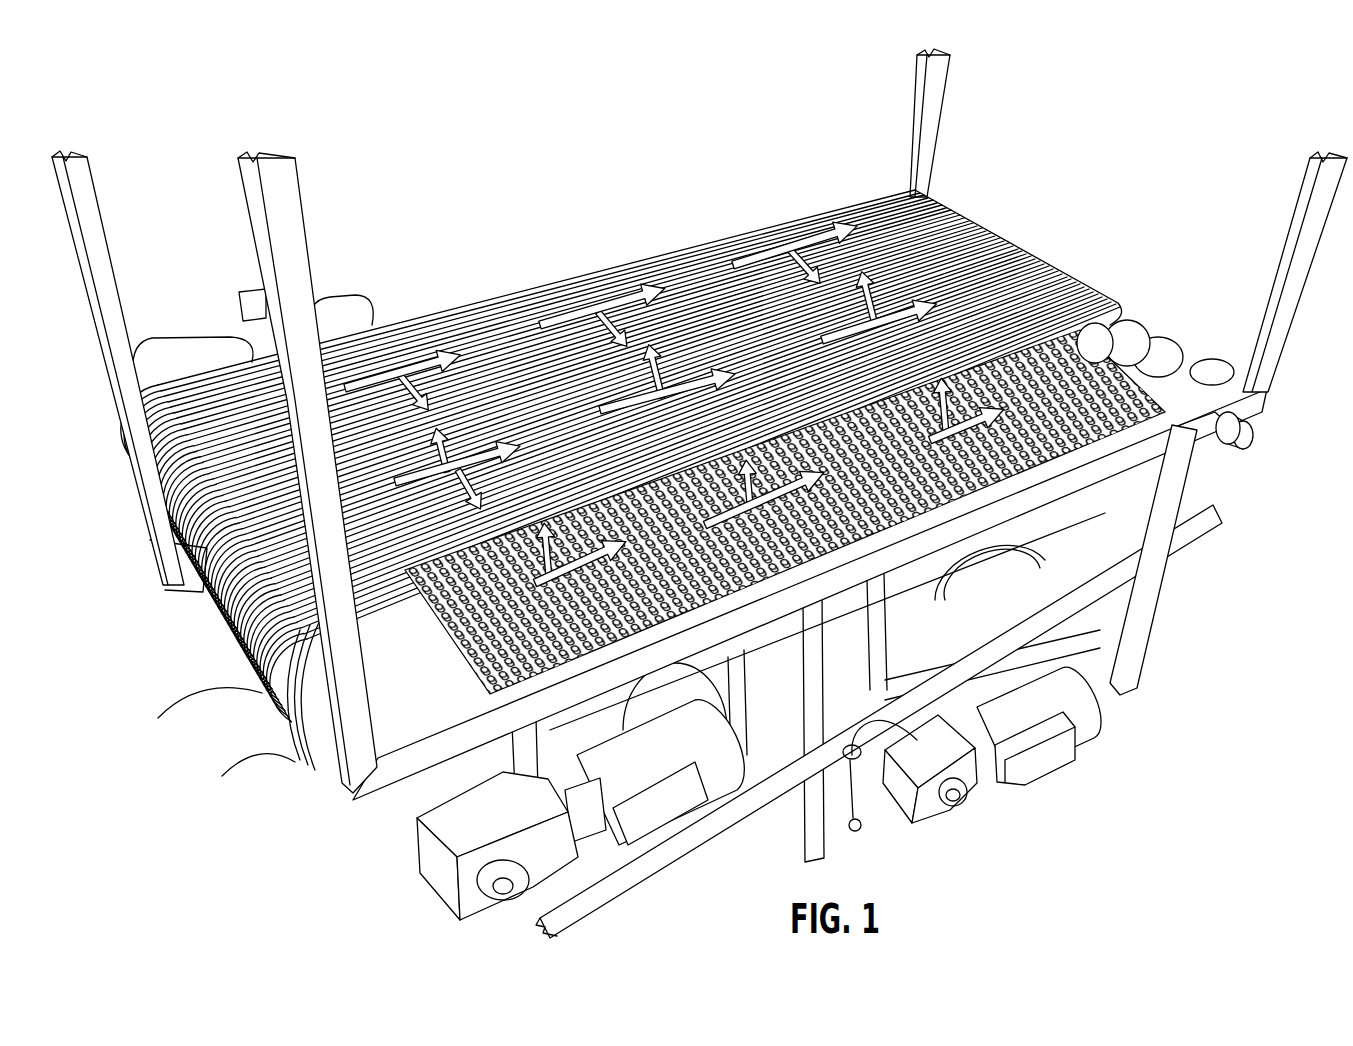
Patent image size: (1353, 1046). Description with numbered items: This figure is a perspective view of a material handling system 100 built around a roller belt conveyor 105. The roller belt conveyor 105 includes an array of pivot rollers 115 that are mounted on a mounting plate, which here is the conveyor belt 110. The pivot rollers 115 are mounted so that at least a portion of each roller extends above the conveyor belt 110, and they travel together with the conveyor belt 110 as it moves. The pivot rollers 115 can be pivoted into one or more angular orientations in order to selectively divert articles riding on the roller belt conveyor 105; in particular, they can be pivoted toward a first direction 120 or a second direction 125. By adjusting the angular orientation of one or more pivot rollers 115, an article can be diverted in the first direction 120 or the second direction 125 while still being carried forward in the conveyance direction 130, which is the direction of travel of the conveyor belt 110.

The material handling system 100 is at (699, 491).
The roller belt conveyor 105 is at (1010, 350).
The conveyor belt 110 is at (1048, 436).
The pivot rollers 115 is at (1013, 465).
The first direction 120 is at (397, 627).
The second direction 125 is at (415, 395).
The conveyance direction 130 is at (1108, 343).